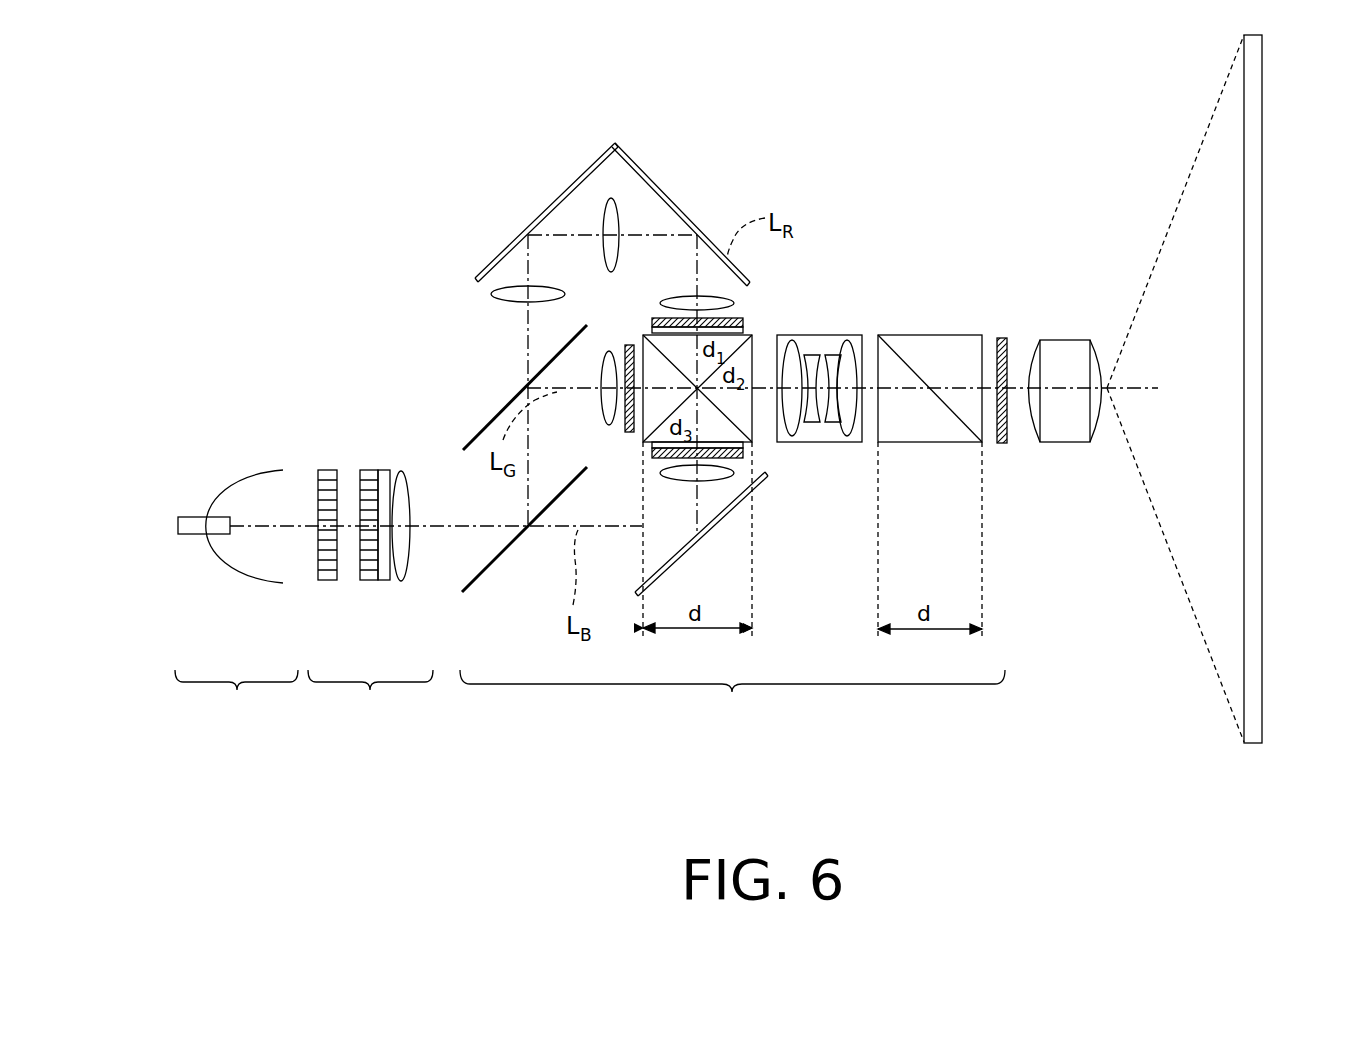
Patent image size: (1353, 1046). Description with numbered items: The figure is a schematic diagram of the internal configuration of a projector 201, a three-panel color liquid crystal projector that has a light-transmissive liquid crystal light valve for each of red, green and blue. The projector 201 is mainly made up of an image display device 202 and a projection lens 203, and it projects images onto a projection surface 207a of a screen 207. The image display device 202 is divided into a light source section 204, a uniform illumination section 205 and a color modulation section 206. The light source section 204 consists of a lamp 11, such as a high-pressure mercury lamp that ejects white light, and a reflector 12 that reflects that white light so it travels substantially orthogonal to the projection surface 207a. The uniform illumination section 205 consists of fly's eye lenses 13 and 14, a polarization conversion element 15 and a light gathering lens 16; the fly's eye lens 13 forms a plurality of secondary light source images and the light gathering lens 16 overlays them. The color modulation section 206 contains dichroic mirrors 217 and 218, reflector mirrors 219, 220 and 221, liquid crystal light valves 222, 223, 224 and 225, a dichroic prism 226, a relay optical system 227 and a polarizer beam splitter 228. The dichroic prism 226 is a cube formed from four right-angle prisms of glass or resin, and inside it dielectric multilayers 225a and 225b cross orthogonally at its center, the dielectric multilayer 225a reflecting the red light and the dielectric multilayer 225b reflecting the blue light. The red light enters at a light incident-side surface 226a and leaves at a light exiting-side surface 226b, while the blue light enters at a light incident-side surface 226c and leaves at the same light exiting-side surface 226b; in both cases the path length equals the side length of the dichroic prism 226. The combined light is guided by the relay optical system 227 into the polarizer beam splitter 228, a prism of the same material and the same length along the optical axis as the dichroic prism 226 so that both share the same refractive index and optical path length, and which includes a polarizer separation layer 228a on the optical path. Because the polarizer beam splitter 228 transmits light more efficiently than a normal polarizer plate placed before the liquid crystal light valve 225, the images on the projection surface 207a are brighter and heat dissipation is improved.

The lamp 11 is at (188, 534).
The reflector 12 is at (238, 568).
The fly's eye lens 13 is at (327, 470).
The fly's eye lens 14 is at (370, 470).
The polarization conversion element 15 is at (380, 580).
The light gathering lens 16 is at (405, 578).
The projector 201 is at (247, 160).
The image display device 202 is at (365, 217).
The projection lens 203 is at (1062, 338).
The light source section 204 is at (236, 698).
The uniform illumination section 205 is at (370, 698).
The color modulation section 206 is at (732, 700).
The screen 207 is at (1262, 722).
The projection surface 207a is at (1244, 735).
The dichroic mirror 217 is at (510, 550).
The dichroic mirror 218 is at (497, 413).
The reflector mirror 219 is at (707, 527).
The reflector mirror 220 is at (563, 187).
The reflector mirror 221 is at (665, 188).
The liquid crystal light valve 222 is at (745, 330).
The liquid crystal light valve 223 is at (630, 436).
The liquid crystal light valve 224 is at (748, 458).
The liquid crystal light valve 225 is at (1000, 336).
The dielectric multilayer 225a is at (650, 322).
The dielectric multilayer 225b is at (746, 445).
The dichroic prism 226 is at (755, 342).
The light incident-side surface 226a is at (745, 333).
The light exiting-side surface 226b is at (792, 445).
The light incident-side surface 226c is at (613, 425).
The relay optical system 227 is at (843, 333).
The polarizer beam splitter 228 is at (938, 333).
The polarizer separation layer 228a is at (980, 443).